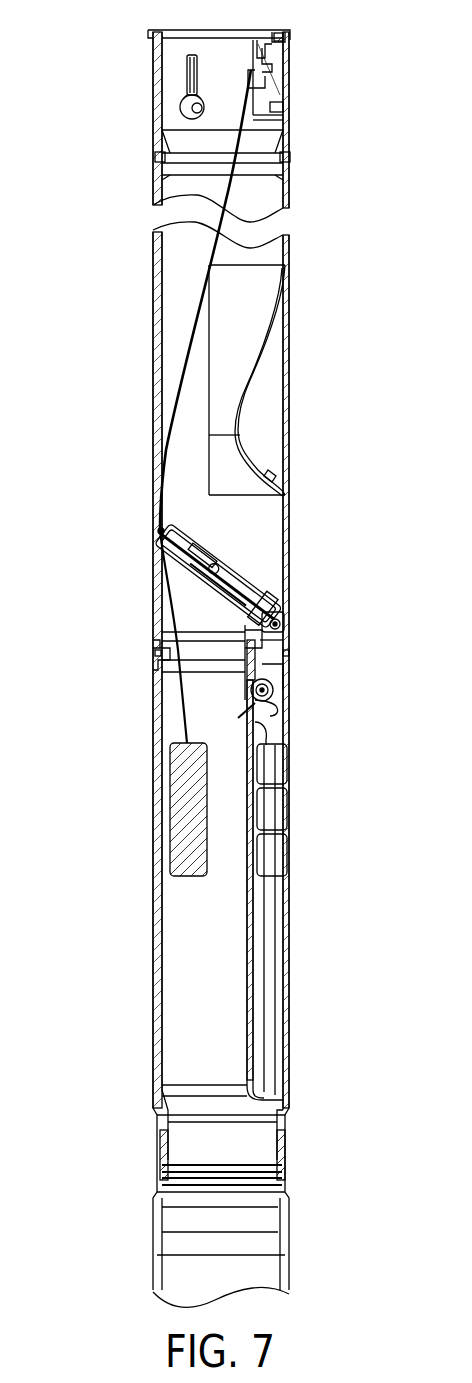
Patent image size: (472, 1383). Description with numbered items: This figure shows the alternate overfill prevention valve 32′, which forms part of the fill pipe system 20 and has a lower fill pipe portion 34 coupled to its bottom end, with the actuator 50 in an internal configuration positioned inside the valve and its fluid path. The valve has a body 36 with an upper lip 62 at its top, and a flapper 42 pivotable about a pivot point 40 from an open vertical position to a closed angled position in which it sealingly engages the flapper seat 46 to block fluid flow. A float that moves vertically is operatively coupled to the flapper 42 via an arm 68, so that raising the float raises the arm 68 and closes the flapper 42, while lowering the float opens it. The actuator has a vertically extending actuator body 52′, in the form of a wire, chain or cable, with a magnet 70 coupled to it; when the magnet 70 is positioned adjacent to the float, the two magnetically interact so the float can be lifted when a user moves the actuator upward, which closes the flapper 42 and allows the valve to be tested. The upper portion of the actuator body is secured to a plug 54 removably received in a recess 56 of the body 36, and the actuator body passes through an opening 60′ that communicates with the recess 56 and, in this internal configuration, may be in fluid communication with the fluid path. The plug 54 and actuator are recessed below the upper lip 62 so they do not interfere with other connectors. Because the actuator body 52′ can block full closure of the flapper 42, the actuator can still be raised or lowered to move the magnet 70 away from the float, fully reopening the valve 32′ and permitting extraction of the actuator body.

The fill pipe system 20 is at (138, 503).
The alternate valve 32′ is at (160, 566).
The lower fill pipe portion 34 is at (290, 1278).
The body 36 is at (282, 96).
The pivot point 40 is at (283, 625).
The flapper 42 is at (224, 564).
The flapper seat 46 is at (166, 528).
The actuator 50 is at (186, 699).
The actuator body 52′ is at (238, 188).
The plug 54 is at (290, 36).
The recess 56 is at (253, 38).
The opening 60′ is at (251, 70).
The upper lip 62 is at (153, 33).
The arm 68 is at (278, 948).
The magnet 70 is at (184, 830).